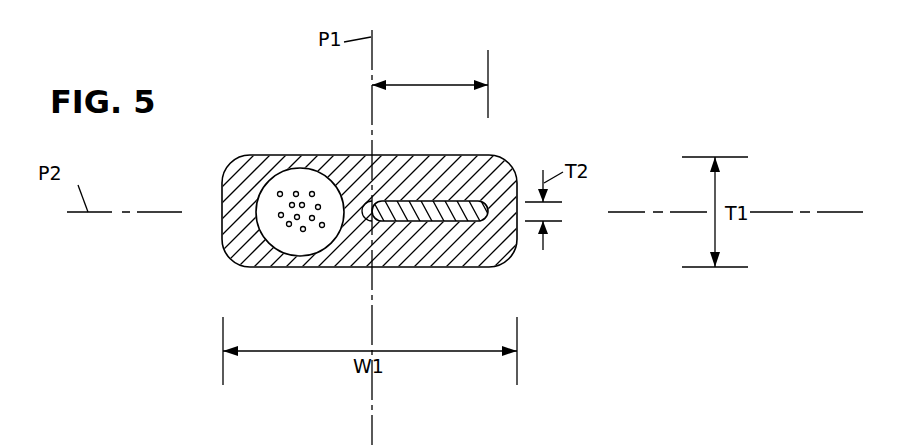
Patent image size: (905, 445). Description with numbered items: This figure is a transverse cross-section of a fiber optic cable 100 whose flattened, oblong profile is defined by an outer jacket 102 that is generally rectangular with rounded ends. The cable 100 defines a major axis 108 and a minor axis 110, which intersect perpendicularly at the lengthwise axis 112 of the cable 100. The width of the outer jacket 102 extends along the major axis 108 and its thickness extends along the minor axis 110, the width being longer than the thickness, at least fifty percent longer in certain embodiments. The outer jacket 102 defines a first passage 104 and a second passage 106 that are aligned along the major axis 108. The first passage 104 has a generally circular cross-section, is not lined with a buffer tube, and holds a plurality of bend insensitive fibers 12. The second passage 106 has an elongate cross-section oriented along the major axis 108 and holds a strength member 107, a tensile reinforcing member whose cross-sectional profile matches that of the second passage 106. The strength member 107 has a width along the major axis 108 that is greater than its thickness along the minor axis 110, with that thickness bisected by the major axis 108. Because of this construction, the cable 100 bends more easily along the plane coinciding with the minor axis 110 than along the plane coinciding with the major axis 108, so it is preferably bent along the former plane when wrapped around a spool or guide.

The bend insensitive fibers 12 is at (280, 194).
The fiber optic cable 100 is at (632, 105).
The outer jacket 102 is at (386, 156).
The first passage 104 is at (280, 249).
The second passage 106 is at (392, 222).
The strength member 107 is at (468, 201).
The major axis 108 is at (113, 212).
The minor axis 110 is at (372, 38).
The lengthwise axis 112 is at (373, 210).